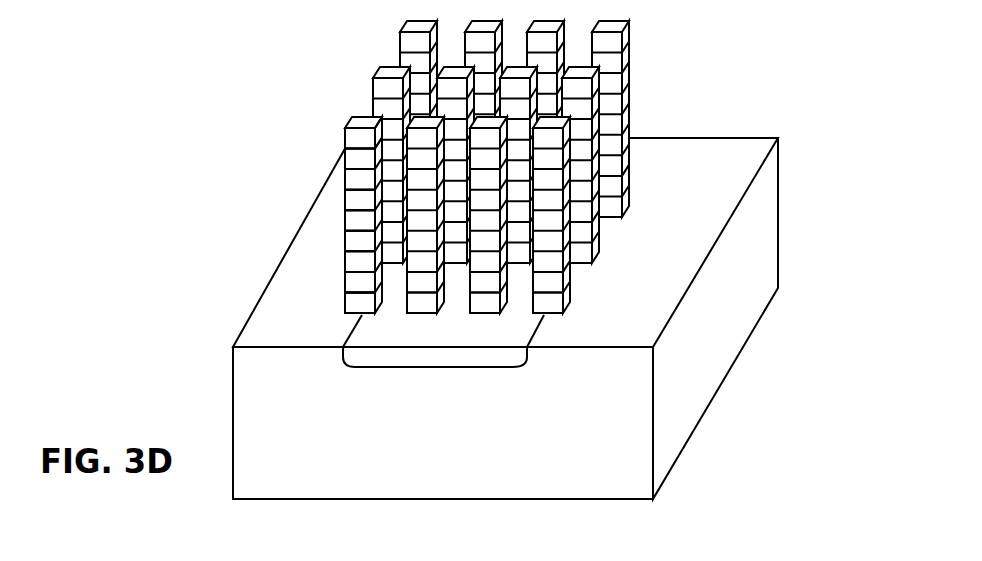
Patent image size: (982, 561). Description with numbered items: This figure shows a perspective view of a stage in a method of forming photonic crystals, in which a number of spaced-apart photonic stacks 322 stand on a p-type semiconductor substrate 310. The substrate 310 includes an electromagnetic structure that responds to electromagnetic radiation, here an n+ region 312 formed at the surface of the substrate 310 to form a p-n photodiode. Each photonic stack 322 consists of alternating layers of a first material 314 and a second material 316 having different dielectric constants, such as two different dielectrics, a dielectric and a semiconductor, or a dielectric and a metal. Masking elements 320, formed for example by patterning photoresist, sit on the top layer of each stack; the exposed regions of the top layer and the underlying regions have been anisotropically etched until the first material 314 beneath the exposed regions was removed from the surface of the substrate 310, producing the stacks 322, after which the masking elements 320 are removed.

The p-type semiconductor substrate 310 is at (759, 220).
The n+ region 312 is at (498, 358).
The first material 314 is at (352, 220).
The second material 316 is at (352, 159).
The masking elements 320 is at (352, 138).
The photonic stacks 322 is at (537, 307).